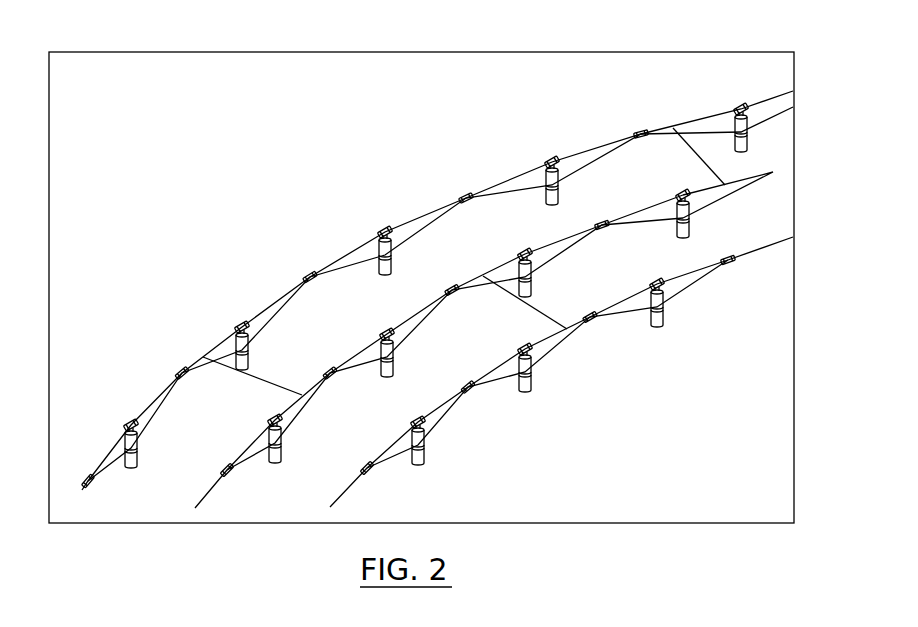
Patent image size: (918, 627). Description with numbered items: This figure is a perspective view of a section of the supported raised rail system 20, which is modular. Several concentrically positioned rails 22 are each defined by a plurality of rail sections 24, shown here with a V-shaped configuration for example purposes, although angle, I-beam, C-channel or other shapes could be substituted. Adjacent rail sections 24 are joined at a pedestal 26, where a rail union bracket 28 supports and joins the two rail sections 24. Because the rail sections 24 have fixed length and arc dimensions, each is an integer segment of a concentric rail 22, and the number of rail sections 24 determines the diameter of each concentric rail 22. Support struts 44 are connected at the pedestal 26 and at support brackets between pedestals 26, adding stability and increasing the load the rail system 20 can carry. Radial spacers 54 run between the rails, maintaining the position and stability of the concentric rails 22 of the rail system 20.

The rail system 20 is at (322, 151).
The concentric rail 22 is at (742, 175).
The rail section 24 is at (345, 252).
The pedestal 26 is at (392, 263).
The rail union bracket 28 is at (394, 345).
The support strut 44 is at (358, 266).
The radial spacer 54 is at (267, 380).